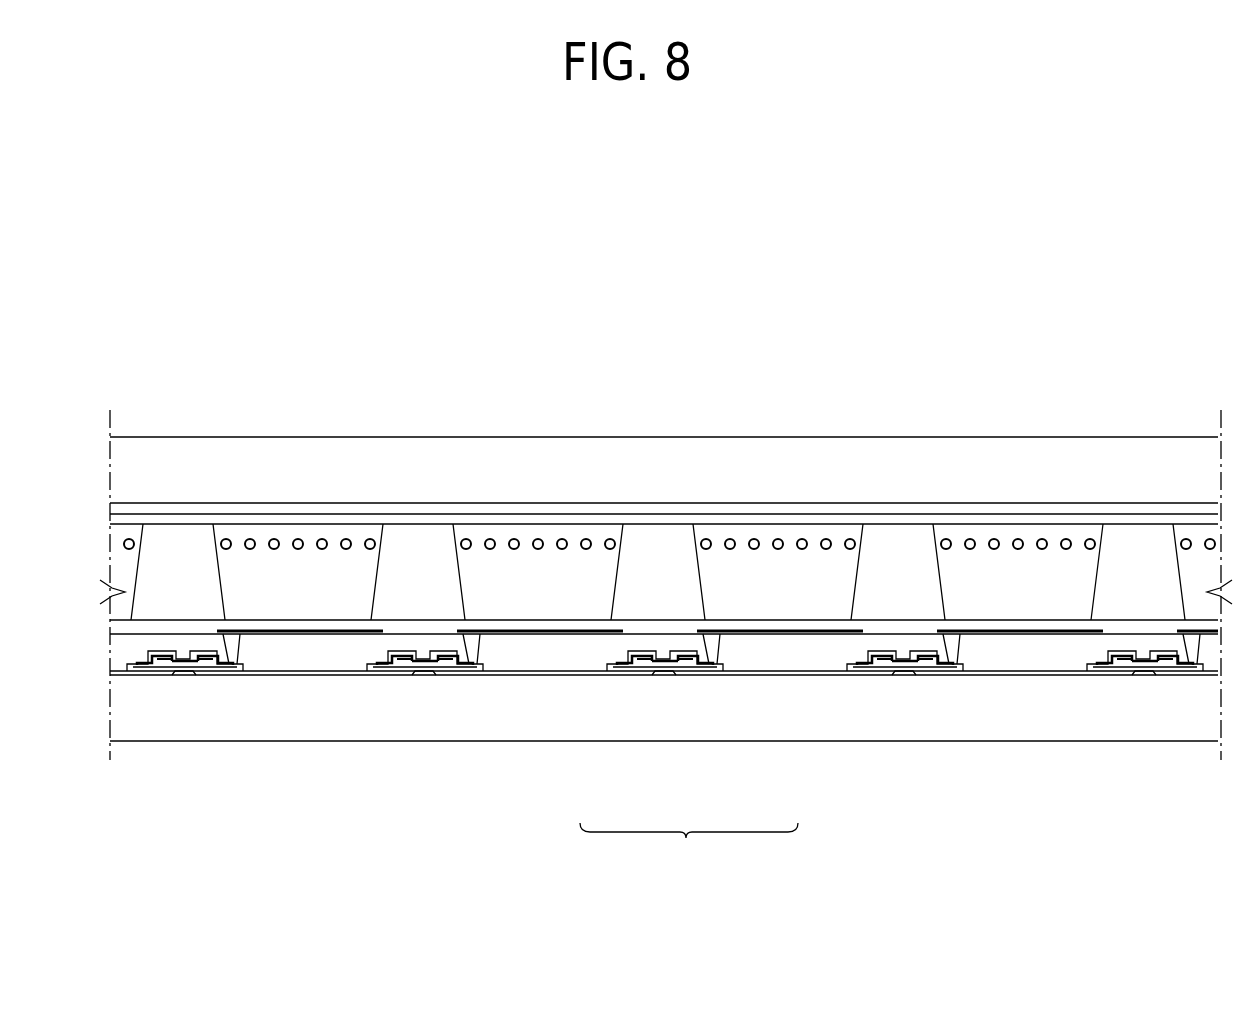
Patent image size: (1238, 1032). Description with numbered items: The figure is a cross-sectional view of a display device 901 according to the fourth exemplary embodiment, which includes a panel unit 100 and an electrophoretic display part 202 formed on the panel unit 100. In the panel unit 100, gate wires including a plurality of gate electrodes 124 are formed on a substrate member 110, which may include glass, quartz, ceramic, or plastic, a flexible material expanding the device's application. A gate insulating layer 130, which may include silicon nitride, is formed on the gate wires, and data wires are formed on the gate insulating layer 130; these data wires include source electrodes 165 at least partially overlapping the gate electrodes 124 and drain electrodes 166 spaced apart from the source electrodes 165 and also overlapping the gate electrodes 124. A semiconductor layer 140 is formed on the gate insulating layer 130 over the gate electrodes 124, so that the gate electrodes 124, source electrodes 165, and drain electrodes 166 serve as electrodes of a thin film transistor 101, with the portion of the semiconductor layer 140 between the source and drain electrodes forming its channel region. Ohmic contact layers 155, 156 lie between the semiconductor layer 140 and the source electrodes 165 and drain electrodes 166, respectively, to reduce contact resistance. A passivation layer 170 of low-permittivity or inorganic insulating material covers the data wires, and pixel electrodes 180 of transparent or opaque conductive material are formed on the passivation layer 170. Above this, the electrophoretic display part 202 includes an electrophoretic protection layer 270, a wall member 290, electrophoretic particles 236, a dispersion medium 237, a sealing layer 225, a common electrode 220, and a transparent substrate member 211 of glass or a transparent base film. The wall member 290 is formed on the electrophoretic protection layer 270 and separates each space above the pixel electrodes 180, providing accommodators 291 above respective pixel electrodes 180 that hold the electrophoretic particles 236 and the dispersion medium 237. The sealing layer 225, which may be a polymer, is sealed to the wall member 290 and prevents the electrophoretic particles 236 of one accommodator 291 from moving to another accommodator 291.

The display device 901 is at (645, 266).
The electrophoretic display part 202 is at (158, 373).
The panel unit 100 is at (240, 770).
The transparent substrate member 211 is at (276, 450).
The common electrode 220 is at (351, 510).
The sealing layer 225 is at (803, 520).
The electrophoretic particle 236 is at (484, 538).
The dispersion medium 237 is at (557, 578).
The electrophoretic protection layer 270 is at (660, 626).
The wall member 290 is at (907, 547).
The accommodator 291 is at (1103, 550).
The substrate member 110 is at (372, 728).
The gate insulating layer 130 is at (488, 673).
The gate electrode 124 is at (670, 676).
The semiconductor layer 140 is at (652, 670).
The ohmic contact layer 155 is at (643, 668).
The ohmic contact layer 156 is at (697, 668).
The source electrode 165 is at (617, 668).
The drain electrode 166 is at (727, 668).
The passivation layer 170 is at (1068, 655).
The pixel electrode 180 is at (1022, 634).
The thin film transistor 101 is at (689, 848).